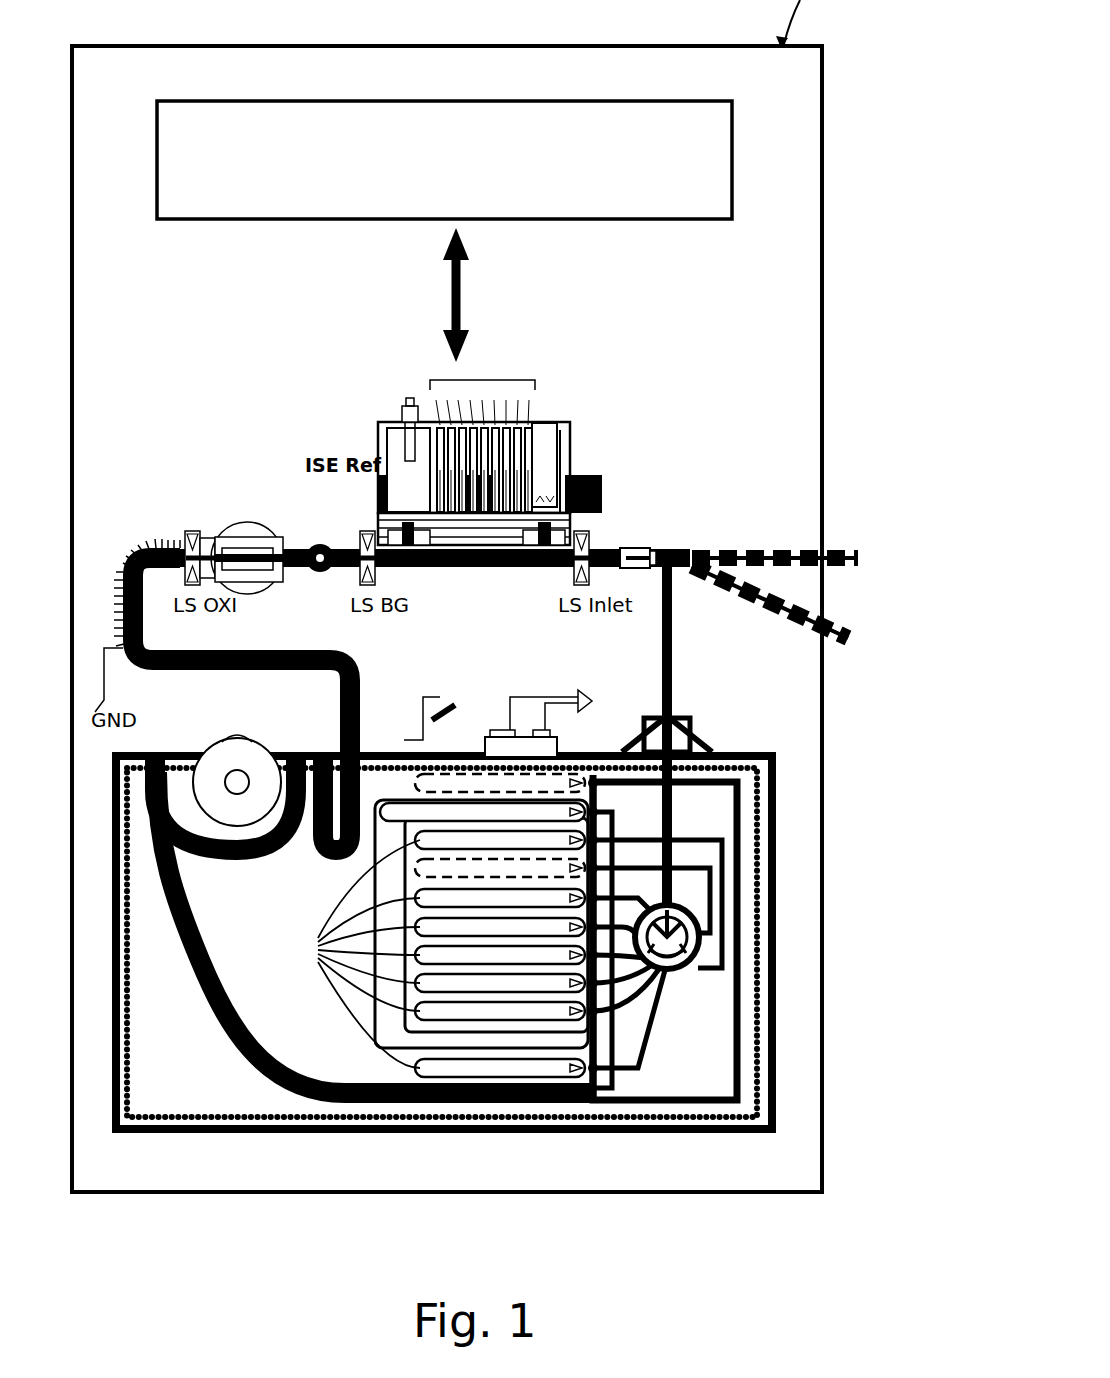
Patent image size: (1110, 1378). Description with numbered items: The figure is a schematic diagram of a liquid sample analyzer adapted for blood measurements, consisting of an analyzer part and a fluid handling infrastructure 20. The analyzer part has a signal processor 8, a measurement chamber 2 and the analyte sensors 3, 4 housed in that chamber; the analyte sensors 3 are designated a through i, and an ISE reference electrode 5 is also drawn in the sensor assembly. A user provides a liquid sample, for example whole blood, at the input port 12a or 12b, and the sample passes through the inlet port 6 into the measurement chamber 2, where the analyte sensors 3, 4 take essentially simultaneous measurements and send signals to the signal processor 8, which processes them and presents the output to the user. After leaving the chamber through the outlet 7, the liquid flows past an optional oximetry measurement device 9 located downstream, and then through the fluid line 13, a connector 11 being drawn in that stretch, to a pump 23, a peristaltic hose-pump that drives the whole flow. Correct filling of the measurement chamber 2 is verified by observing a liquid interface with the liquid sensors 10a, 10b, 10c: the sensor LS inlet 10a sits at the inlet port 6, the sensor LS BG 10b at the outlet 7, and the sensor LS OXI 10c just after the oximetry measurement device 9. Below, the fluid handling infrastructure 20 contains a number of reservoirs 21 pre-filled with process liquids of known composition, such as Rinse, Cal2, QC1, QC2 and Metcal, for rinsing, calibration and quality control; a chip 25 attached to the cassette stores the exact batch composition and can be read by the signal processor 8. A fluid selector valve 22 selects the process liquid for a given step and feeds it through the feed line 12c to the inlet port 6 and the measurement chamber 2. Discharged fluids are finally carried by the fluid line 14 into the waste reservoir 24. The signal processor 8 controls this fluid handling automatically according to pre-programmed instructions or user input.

The measurement chamber 2 is at (470, 520).
The analyte sensors 3 is at (513, 378).
The analyte sensor 4 is at (547, 432).
The ISE reference electrode 5 is at (395, 457).
The inlet port 6 is at (545, 545).
The outlet 7 is at (410, 540).
The signal processor 8 is at (660, 222).
The oximetry measurement device 9 is at (250, 540).
The liquid sensor LS inlet 10a is at (590, 540).
The liquid sensor LS BG 10b is at (365, 538).
The liquid sensor LS OXI 10c is at (190, 538).
The connector 11 is at (320, 575).
The input port 12a is at (752, 548).
The input port 12b is at (760, 606).
The feed line 12c is at (670, 660).
The fluid line 13 is at (132, 578).
The fluid line 14 is at (205, 1000).
The fluid handling infrastructure 20 is at (748, 752).
The reservoirs 21 is at (352, 954).
The fluid selector valve 22 is at (690, 1052).
The pump 23 is at (237, 780).
The waste reservoir 24 is at (378, 838).
The chip 25 is at (512, 745).